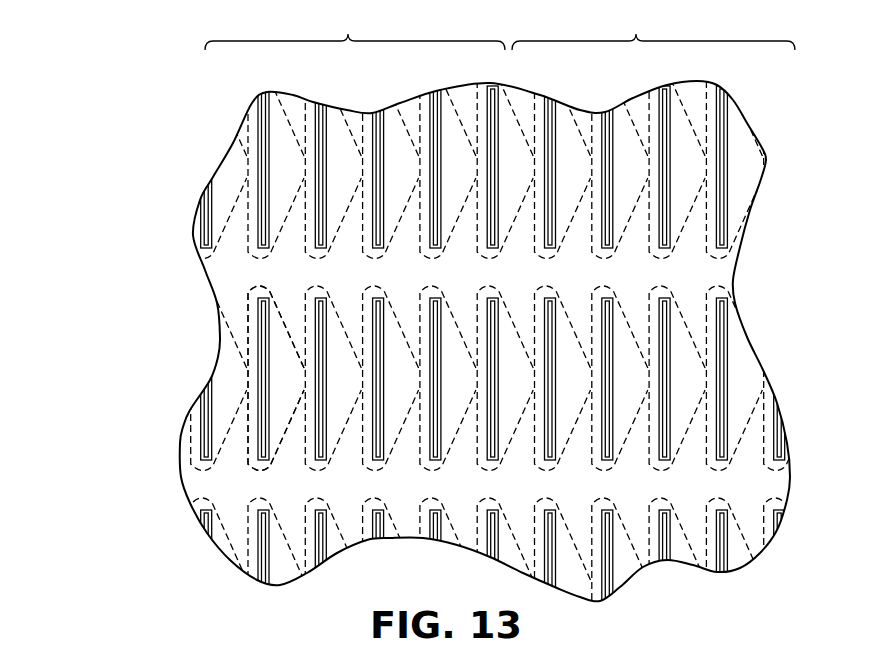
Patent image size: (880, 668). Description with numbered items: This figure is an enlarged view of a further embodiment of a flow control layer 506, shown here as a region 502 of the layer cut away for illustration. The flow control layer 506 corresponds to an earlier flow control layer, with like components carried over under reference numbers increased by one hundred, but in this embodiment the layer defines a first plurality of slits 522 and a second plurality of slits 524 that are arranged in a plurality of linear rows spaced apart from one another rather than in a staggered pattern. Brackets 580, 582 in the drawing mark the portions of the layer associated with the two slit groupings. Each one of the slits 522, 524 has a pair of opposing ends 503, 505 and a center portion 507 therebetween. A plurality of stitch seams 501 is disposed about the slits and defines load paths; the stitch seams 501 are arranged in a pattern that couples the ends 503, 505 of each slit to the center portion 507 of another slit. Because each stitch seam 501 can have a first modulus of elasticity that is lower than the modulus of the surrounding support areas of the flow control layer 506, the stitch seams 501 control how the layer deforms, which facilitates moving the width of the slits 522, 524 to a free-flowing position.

The garment layer 502 is at (110, 142).
The flow control layer 506 is at (203, 176).
The stitch seam 501 is at (249, 321).
The opposing end 503 is at (249, 327).
The opposing end 505 is at (258, 420).
The center portion 507 is at (314, 378).
The first plurality of slits 522 is at (420, 112).
The second plurality of slits 524 is at (713, 112).
The first region 580 is at (355, 28).
The second region 582 is at (653, 28).